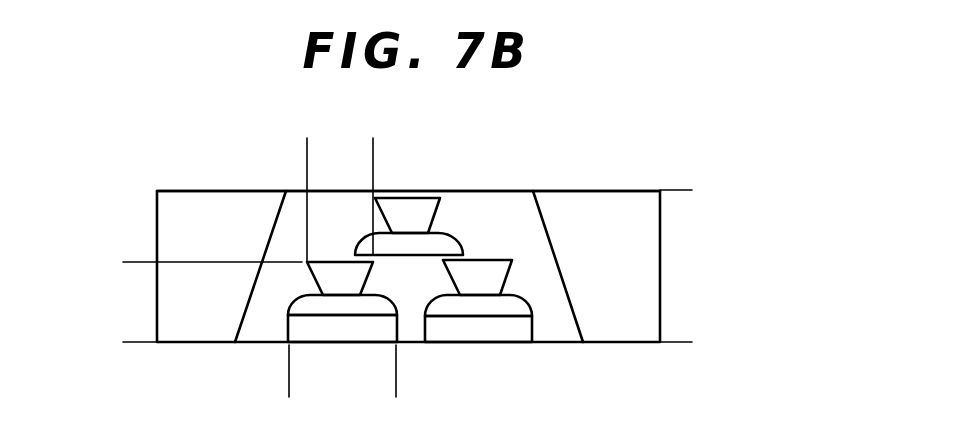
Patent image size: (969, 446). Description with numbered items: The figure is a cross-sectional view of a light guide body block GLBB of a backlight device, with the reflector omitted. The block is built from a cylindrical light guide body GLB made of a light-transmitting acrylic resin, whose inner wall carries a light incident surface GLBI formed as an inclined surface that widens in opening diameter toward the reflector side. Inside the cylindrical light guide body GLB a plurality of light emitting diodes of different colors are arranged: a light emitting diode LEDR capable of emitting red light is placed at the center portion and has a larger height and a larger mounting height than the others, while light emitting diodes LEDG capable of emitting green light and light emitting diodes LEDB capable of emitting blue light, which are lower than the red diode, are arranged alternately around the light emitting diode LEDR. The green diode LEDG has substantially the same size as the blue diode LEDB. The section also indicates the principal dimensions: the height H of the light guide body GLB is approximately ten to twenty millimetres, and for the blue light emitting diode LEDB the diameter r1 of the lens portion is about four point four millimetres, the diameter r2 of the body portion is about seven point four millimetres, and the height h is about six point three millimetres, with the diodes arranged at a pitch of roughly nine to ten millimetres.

The light guide body GLB is at (588, 203).
The light guide body block GLBB is at (208, 189).
The light incident surface GLBI is at (577, 325).
The light emitting diode capable of emitting blue light LEDB is at (323, 277).
The light emitting diode capable of emitting red light LEDR is at (405, 220).
The light emitting diode capable of emitting green light LEDG is at (478, 285).
The diameter of lens portion r1 is at (307, 158).
The diameter of body portion r2 is at (289, 370).
The height of light emitting diode h is at (141, 262).
The height of light guide body H is at (678, 190).